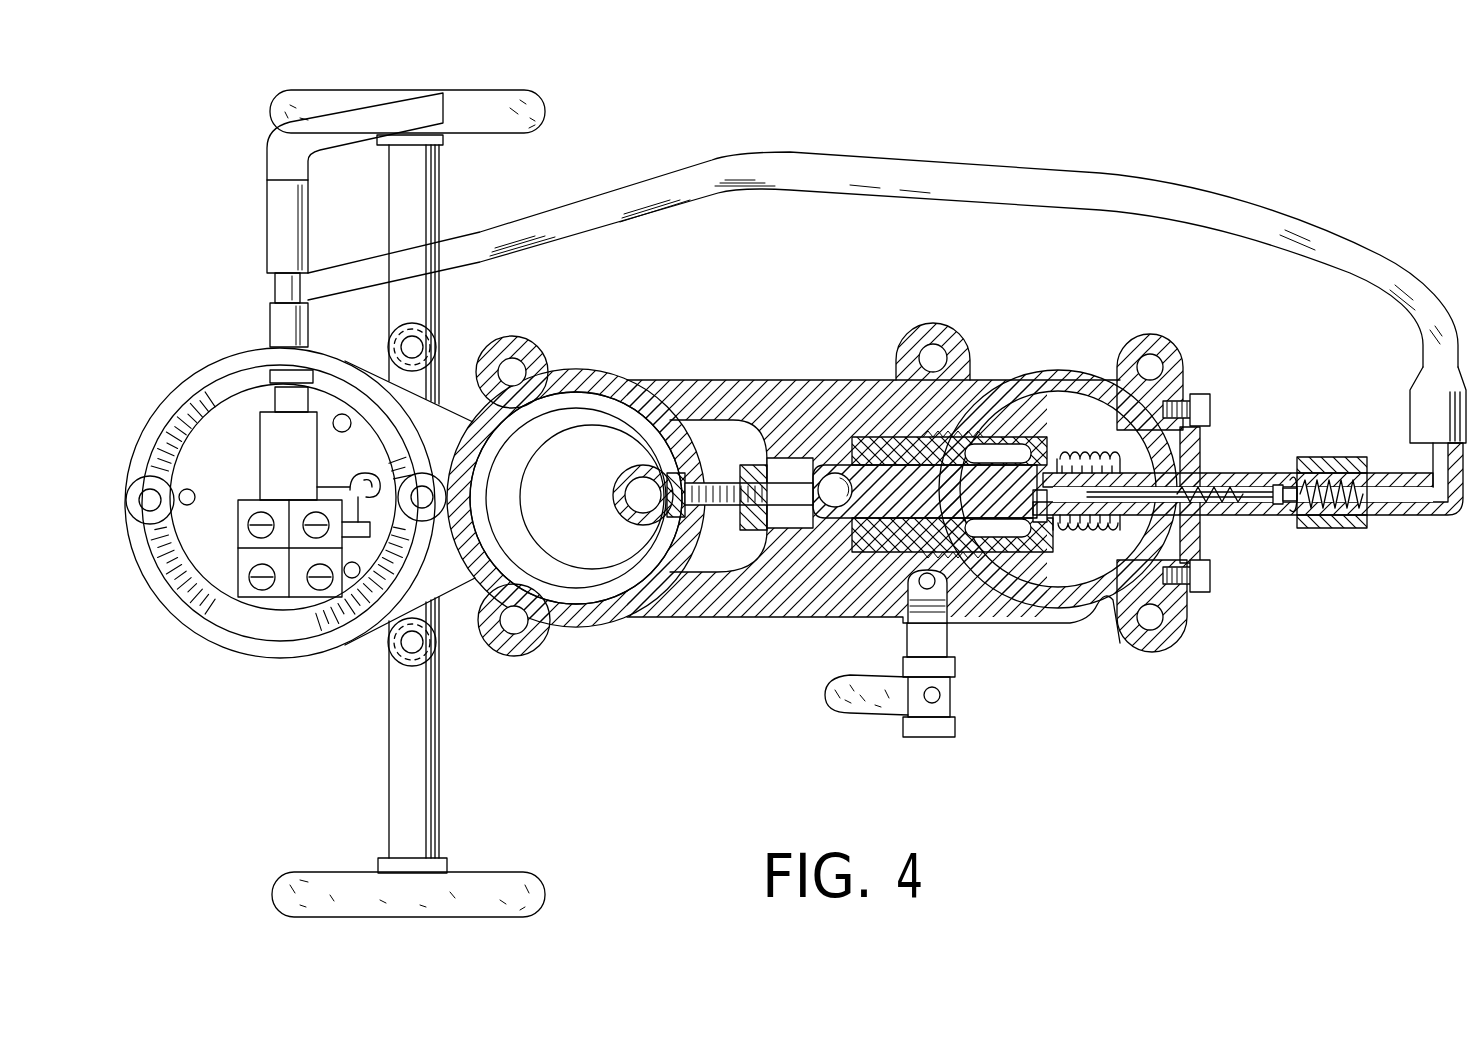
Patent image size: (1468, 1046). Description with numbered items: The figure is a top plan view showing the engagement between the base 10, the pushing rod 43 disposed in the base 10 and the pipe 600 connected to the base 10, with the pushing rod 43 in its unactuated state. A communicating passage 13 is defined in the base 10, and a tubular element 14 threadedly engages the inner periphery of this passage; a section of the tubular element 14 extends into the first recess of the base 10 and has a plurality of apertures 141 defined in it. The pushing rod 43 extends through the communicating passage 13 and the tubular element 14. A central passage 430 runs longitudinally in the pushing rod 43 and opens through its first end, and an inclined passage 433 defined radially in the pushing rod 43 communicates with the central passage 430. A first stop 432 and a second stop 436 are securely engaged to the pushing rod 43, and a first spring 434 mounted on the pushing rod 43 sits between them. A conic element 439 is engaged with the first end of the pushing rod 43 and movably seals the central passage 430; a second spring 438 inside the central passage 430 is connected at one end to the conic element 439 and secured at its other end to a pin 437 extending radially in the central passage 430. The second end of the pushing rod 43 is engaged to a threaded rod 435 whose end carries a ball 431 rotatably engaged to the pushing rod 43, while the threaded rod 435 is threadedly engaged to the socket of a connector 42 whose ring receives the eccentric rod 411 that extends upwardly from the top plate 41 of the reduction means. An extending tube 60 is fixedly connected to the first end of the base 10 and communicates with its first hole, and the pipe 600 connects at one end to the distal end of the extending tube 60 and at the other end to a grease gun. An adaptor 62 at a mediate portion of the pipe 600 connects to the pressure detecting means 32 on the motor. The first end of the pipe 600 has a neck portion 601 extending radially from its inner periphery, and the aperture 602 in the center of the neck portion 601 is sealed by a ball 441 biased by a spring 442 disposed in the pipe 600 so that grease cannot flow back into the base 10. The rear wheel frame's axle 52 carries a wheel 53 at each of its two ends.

The base 10 is at (723, 608).
The communicating passage 13 is at (807, 520).
The tubular element 14 is at (975, 425).
The apertures 141 is at (1010, 450).
The pressure detecting means 32 is at (225, 560).
The top plate 41 is at (605, 417).
The eccentric rod 411 is at (650, 483).
The connector 42 is at (683, 512).
The pushing rod 43 is at (877, 463).
The central passage 430 is at (1170, 487).
The ball 431 is at (830, 476).
The first stop 432 is at (1060, 440).
The inclined passage 433 is at (1000, 527).
The first spring 434 is at (1085, 460).
The threaded rod 435 is at (785, 483).
The second stop 436 is at (1187, 360).
The pin 437 is at (1077, 522).
The second spring 438 is at (1257, 477).
The conic element 439 is at (1280, 510).
The ball 441 is at (1300, 517).
The spring 442 is at (1347, 467).
The axle 52 is at (427, 772).
The wheel 53 is at (510, 873).
The extending tube 60 is at (1257, 520).
The pipe 600 is at (1215, 198).
The neck portion 601 is at (1297, 517).
The aperture 602 is at (1287, 493).
The adaptor 62 is at (266, 268).